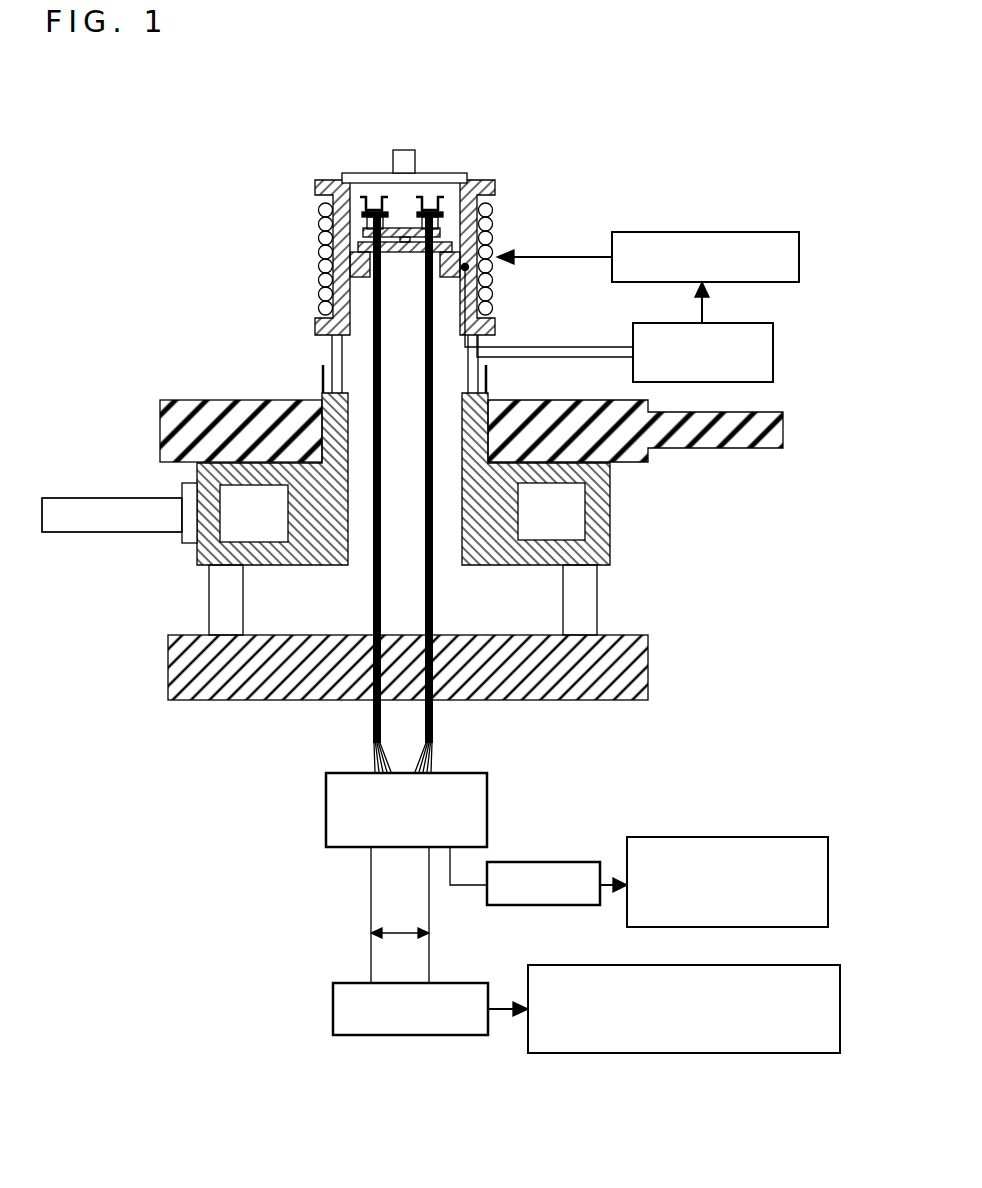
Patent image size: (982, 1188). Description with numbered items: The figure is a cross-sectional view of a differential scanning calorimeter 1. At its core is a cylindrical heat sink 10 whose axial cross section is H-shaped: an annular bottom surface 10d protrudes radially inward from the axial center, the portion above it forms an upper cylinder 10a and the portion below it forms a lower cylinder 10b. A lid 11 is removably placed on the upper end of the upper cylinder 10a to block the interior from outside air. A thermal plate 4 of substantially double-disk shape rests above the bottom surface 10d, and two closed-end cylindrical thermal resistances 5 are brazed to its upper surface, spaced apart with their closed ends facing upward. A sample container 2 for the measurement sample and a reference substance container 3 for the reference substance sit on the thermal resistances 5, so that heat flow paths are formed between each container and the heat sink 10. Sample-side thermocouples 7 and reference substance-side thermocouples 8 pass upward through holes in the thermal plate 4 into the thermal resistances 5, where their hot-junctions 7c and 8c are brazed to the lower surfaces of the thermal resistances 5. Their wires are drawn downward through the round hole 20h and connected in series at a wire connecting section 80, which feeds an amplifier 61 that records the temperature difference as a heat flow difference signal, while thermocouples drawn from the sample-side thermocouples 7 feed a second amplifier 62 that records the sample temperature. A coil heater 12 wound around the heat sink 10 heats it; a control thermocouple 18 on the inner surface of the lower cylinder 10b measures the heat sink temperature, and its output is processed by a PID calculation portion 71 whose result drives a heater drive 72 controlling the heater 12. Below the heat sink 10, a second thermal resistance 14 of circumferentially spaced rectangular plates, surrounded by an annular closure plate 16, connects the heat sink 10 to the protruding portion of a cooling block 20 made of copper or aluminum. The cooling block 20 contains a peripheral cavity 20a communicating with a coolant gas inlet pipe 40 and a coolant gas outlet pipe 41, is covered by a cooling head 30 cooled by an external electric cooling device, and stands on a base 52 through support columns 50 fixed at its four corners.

The differential scanning calorimeter 1 is at (694, 156).
The sample container 2 is at (371, 197).
The reference substance container 3 is at (436, 197).
The thermal plate 4 is at (401, 253).
The thermal resistances 5 is at (443, 178).
The sample-side thermocouples 7 is at (370, 727).
The hot-junction 7c is at (398, 213).
The reference substance-side thermocouples 8 is at (434, 727).
The hot-junction 8c is at (412, 213).
The heat sink 10 is at (542, 184).
The upper cylinder 10a is at (490, 183).
The lower cylinder 10b is at (480, 310).
The bottom surface 10d is at (362, 280).
The lid 11 is at (336, 180).
The coil heater 12 is at (303, 203).
The second thermal resistance 14 is at (333, 347).
The annular closure plate 16 is at (322, 380).
The control thermocouple 18 is at (468, 267).
The cooling block 20 is at (605, 549).
The cavity 20a is at (572, 498).
The round hole 20h is at (367, 570).
The cooling head 30 is at (212, 397).
The coolant gas inlet pipe 40 is at (110, 505).
The coolant gas outlet pipe 41 is at (110, 505).
The support columns 50 is at (217, 603).
The base 52 is at (175, 680).
The amplifier 61 is at (333, 995).
The amplifier 62 is at (550, 862).
The PID calculation portion 71 is at (773, 345).
The heater drive 72 is at (757, 232).
The wire connecting section 80 is at (488, 793).